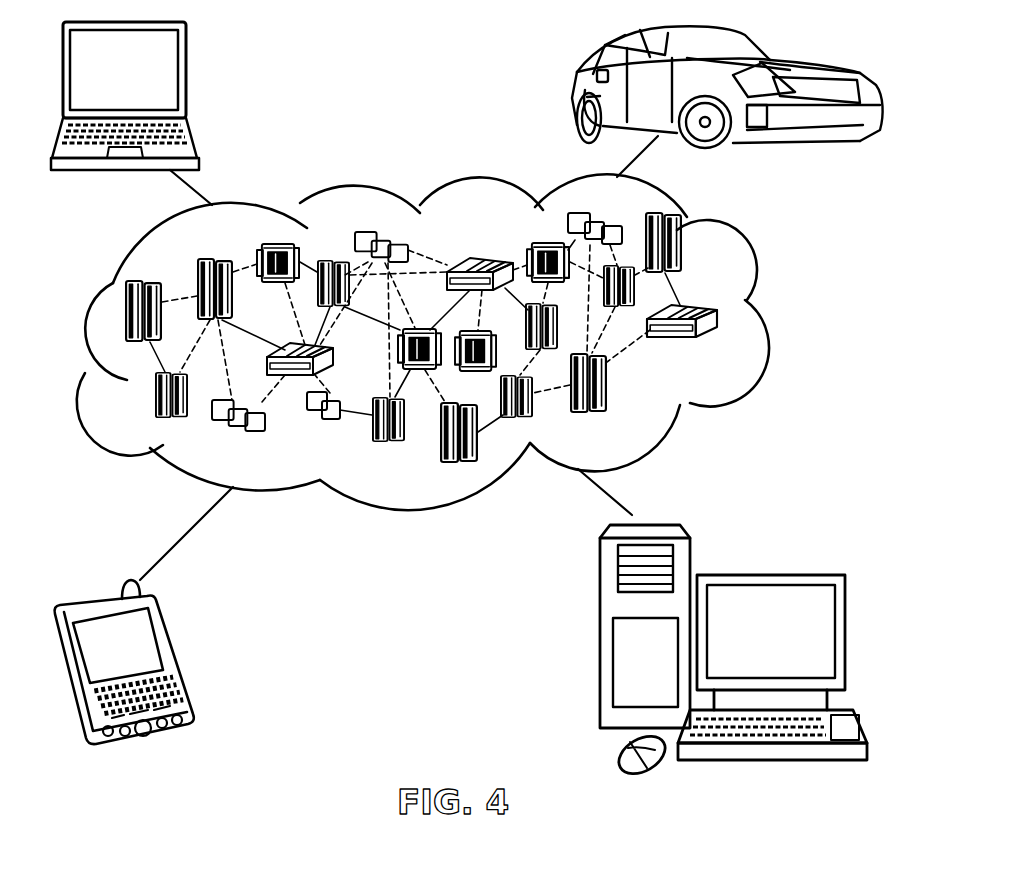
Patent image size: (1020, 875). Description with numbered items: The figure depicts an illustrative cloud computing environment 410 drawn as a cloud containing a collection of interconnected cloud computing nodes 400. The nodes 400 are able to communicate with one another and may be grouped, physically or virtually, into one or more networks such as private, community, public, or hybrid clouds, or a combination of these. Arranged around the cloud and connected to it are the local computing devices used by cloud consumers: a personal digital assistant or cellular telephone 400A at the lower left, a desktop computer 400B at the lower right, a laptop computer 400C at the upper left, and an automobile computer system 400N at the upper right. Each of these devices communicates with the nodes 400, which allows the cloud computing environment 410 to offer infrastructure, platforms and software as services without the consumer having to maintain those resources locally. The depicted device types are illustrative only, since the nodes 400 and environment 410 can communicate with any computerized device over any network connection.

The cloud computing nodes 400 is at (457, 342).
The cloud computing environment 410 is at (758, 319).
The personal digital assistant (PDA) or cellular telephone 400A is at (177, 659).
The desktop computer 400B is at (768, 577).
The laptop computer 400C is at (186, 77).
The automobile computer system 400N is at (577, 93).